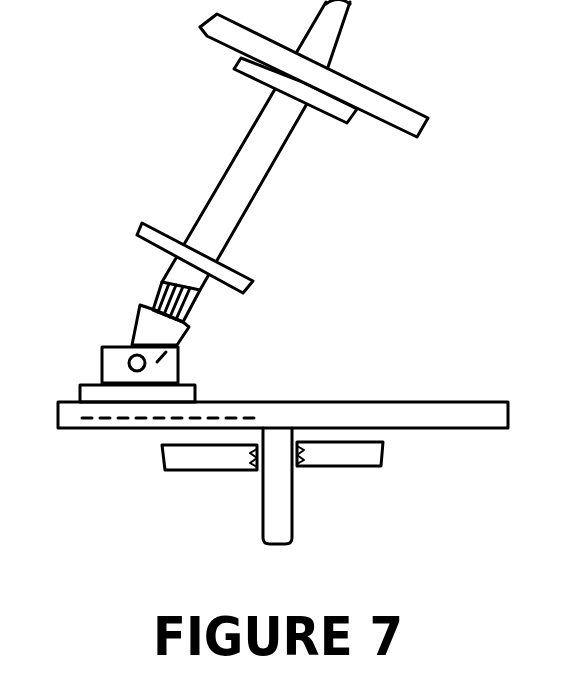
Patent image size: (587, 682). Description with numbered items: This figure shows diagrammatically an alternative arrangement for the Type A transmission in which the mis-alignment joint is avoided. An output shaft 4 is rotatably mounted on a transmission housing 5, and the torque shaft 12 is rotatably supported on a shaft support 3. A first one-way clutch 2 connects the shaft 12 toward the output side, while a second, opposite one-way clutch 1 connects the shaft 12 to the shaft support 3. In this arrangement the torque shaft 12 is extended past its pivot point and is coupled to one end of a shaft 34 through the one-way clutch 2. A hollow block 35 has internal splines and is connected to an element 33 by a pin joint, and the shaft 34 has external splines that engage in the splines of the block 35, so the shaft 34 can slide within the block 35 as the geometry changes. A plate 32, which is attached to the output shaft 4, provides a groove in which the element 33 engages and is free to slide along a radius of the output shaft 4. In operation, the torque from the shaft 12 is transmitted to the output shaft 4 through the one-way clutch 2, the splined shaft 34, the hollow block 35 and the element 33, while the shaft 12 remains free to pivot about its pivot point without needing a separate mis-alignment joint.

The second one-way clutch 1 is at (353, 118).
The first one-way clutch 2 is at (257, 285).
The shaft support 3 is at (393, 108).
The output shaft 4 is at (283, 497).
The transmission housing 5 is at (384, 450).
The torque shaft 12 is at (354, 22).
The plate 32 is at (428, 402).
The element 33 is at (178, 365).
The shaft 34 is at (165, 269).
The hollow block 35 is at (140, 322).